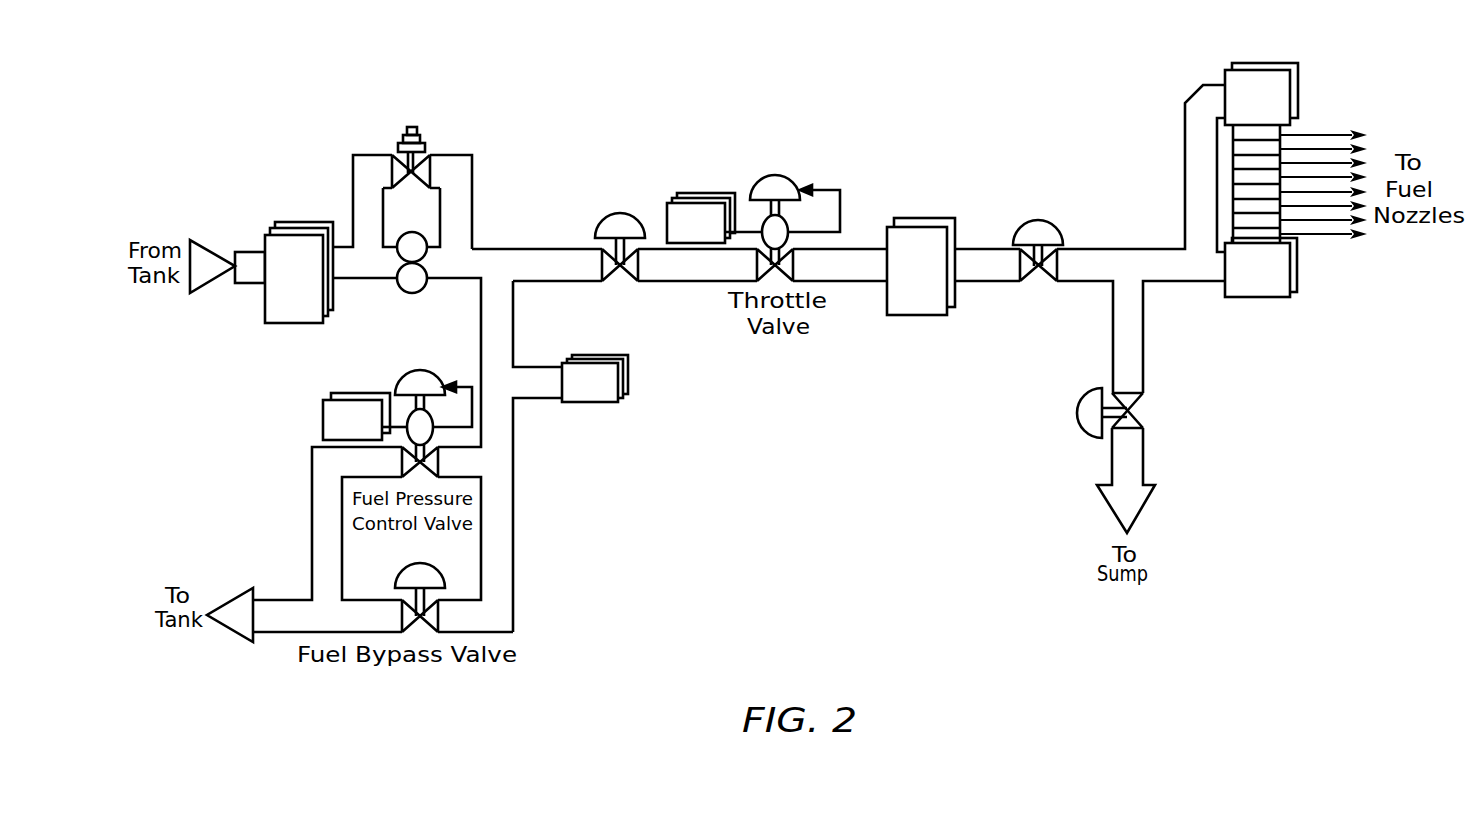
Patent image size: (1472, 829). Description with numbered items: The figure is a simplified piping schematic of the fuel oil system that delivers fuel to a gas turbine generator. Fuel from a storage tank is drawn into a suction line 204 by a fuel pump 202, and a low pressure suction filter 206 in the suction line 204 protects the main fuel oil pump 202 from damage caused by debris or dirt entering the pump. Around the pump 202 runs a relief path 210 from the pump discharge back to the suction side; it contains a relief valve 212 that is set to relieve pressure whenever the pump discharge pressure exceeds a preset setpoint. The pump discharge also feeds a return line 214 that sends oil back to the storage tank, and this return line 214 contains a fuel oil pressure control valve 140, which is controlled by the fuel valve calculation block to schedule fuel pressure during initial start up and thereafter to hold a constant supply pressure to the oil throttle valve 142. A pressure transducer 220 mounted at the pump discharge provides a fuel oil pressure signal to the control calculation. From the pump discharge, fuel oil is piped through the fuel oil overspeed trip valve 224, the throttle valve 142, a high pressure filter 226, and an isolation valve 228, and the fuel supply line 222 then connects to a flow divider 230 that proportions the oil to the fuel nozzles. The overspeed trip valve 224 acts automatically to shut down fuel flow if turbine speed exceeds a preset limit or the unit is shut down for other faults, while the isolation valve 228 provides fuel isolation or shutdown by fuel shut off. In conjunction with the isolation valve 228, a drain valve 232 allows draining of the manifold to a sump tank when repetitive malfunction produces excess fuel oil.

The fuel oil pressure control valve 140 is at (403, 377).
The throttle valve 142 is at (777, 175).
The fuel pump 202 is at (423, 289).
The suction line 204 is at (518, 249).
The low pressure suction filter 206 is at (288, 324).
The relief path 210 is at (473, 202).
The relief valve 212 is at (425, 138).
The return line 214 is at (513, 338).
The pressure transducer 220 is at (628, 382).
The fuel supply line 222 is at (1110, 250).
The fuel oil overspeed trip valve 224 is at (627, 214).
The high pressure filter 226 is at (918, 216).
The isolation valve 228 is at (1045, 221).
The flow divider 230 is at (1268, 63).
The drain valve 232 is at (1080, 408).